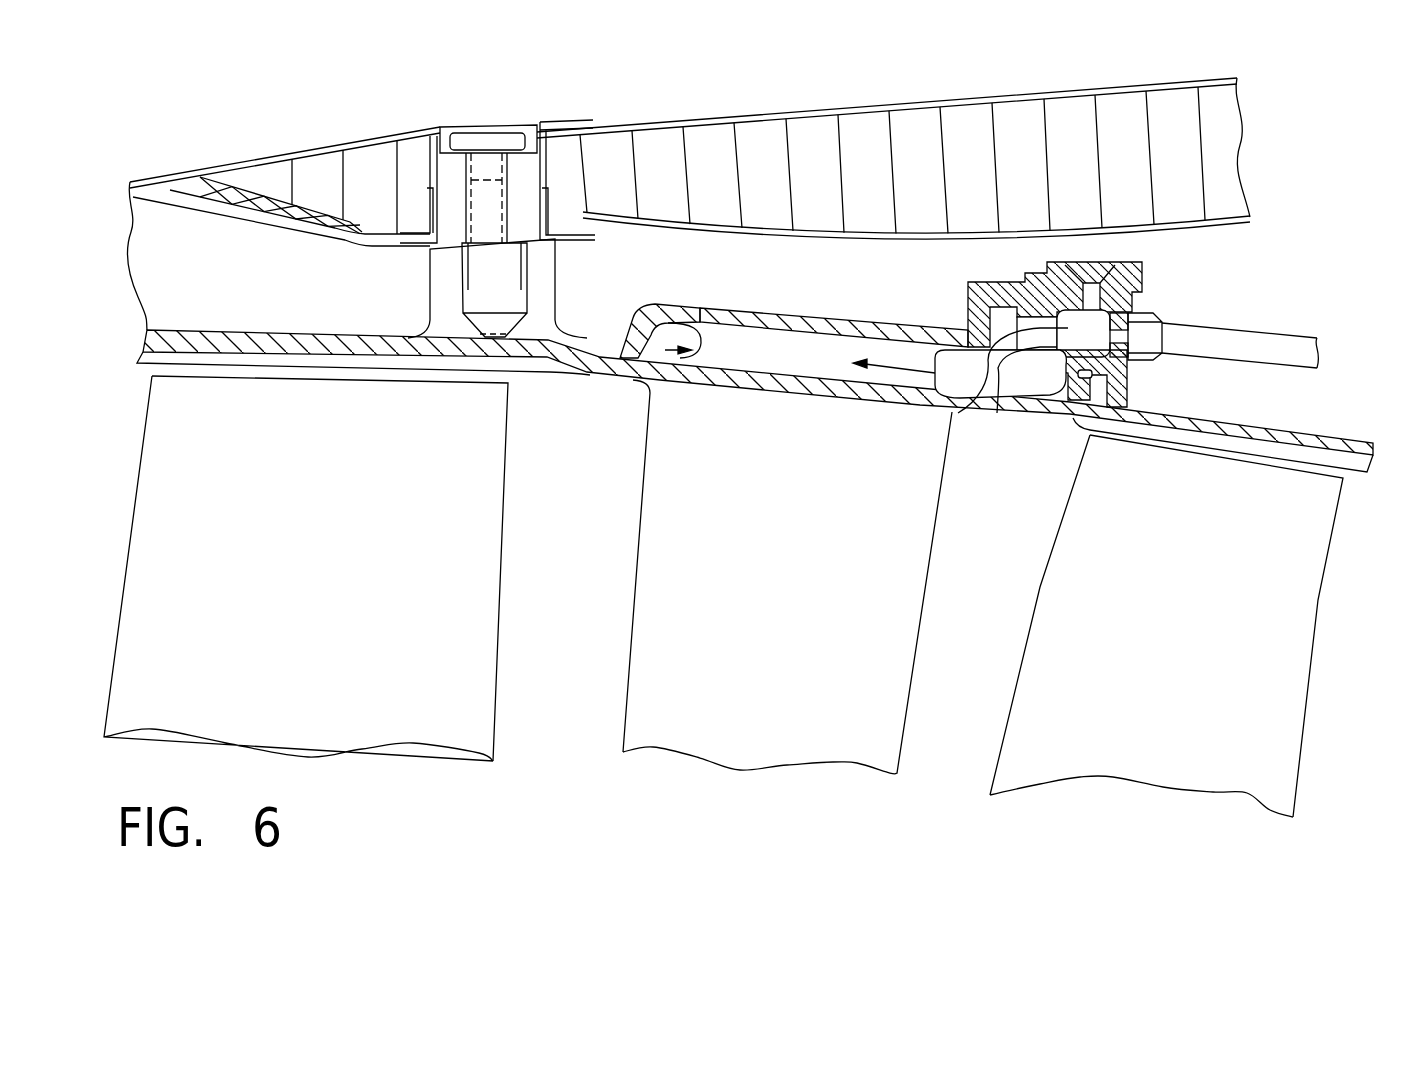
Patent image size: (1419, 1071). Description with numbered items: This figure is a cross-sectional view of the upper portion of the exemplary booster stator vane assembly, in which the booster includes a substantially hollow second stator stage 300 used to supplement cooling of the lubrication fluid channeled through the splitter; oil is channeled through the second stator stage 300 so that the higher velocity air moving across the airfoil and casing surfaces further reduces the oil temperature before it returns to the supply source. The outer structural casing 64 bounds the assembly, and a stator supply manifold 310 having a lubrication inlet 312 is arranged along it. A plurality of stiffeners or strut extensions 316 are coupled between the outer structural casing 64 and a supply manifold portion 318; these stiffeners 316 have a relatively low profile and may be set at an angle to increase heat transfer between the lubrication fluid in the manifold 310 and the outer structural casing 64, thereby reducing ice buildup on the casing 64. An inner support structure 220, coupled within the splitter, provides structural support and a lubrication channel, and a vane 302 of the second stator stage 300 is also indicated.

The outer structural casing 64 is at (793, 393).
The inner support structure 220 is at (978, 425).
The second stator stage 300 is at (723, 596).
The nozzle vane 302 is at (707, 535).
The stator supply manifold 310 is at (640, 312).
The lubrication inlet 312 is at (1212, 338).
The stiffeners or strut extensions 316 is at (758, 347).
The supply manifold portion 318 is at (885, 337).